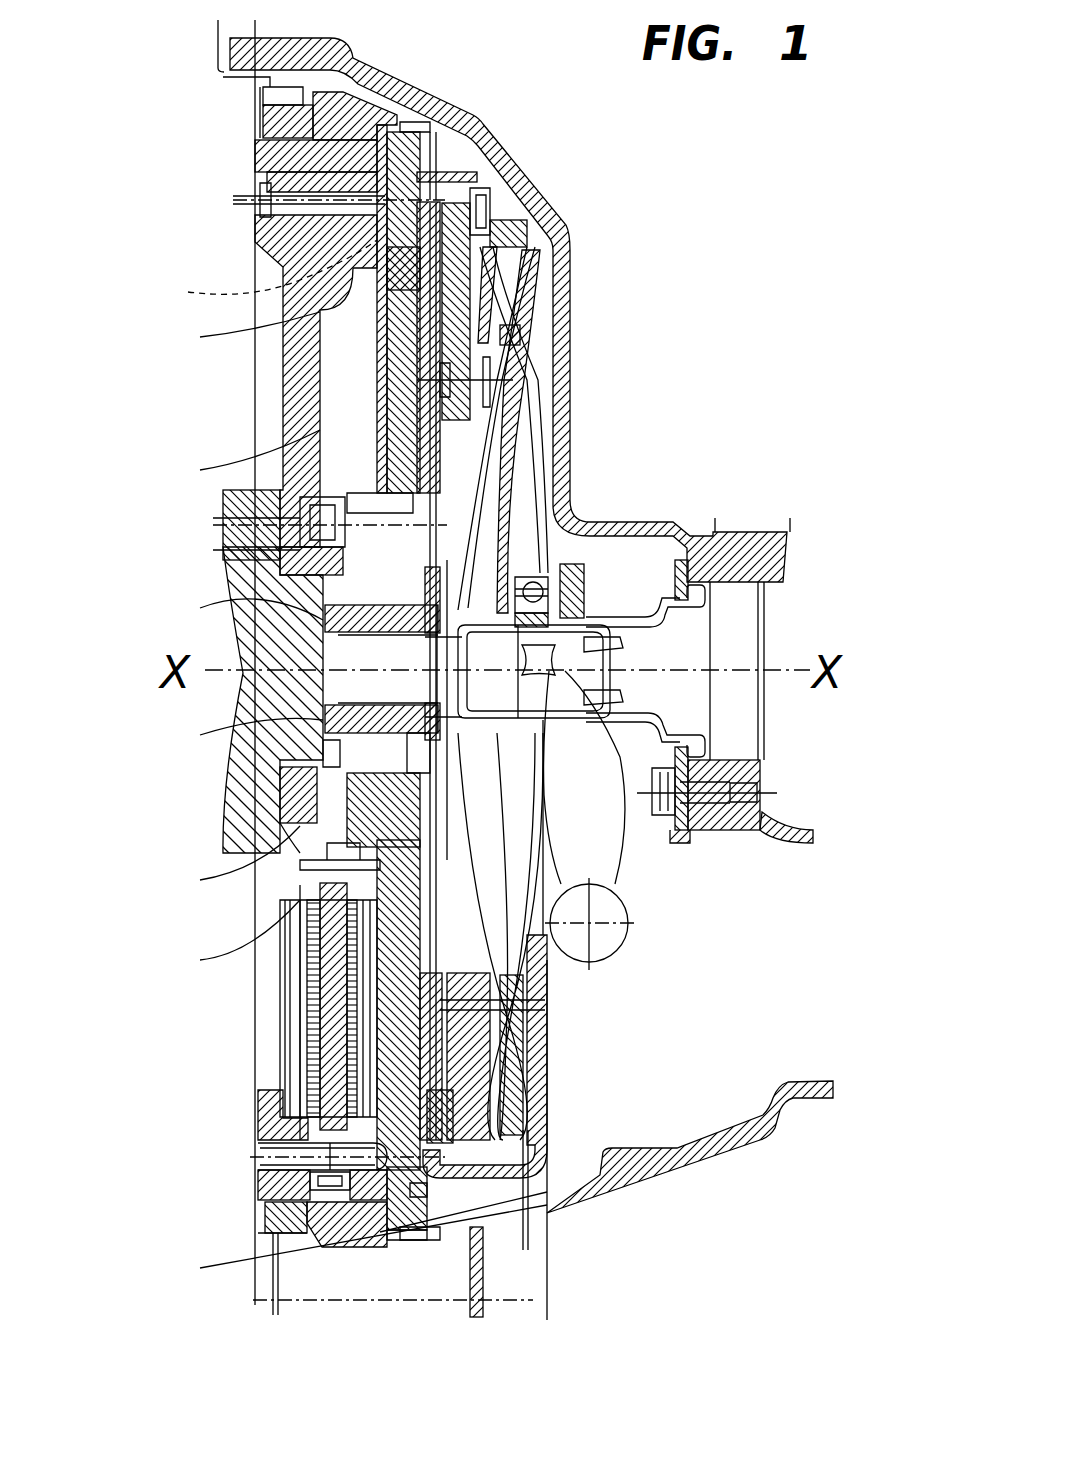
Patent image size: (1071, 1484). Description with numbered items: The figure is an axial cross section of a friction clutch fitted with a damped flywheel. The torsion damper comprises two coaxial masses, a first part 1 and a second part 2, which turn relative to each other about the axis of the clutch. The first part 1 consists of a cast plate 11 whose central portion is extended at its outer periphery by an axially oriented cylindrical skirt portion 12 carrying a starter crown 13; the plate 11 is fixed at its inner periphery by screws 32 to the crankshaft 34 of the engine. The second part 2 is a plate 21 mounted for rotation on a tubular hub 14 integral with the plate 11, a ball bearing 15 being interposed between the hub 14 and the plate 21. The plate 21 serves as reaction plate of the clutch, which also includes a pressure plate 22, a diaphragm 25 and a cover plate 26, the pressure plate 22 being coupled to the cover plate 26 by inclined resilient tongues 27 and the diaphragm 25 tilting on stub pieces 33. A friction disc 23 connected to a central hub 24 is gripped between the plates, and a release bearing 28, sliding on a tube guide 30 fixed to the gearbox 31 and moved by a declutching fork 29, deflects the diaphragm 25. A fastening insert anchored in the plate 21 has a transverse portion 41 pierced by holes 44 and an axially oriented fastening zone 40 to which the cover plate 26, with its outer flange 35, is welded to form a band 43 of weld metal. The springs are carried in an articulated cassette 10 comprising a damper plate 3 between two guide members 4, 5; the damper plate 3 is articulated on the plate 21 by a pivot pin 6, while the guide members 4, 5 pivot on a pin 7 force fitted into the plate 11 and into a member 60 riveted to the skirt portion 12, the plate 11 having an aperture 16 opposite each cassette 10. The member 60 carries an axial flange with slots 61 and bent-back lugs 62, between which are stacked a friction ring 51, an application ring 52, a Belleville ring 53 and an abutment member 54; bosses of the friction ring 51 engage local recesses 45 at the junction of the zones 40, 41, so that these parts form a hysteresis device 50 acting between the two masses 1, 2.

The first coaxial part 1 is at (232, 235).
The second coaxial part 2 is at (445, 156).
The damper plate 3 is at (313, 998).
The guide member 4 is at (307, 1062).
The guide member 5 is at (318, 1095).
The pivot pin 6 is at (332, 880).
The pivot pin 7 is at (300, 1160).
The articulated cassette 10 is at (300, 1035).
The plate 11 is at (285, 378).
The cylindrical skirt portion 12 is at (362, 112).
The starter crown 13 is at (262, 108).
The tubular hub 14 is at (338, 618).
The bearing 15 is at (240, 575).
The aperture 16 is at (340, 866).
The reaction plate 21 is at (377, 417).
The pressure plate 22 is at (453, 200).
The friction disc 23 is at (435, 448).
The central hub 24 is at (345, 722).
The diaphragm 25 is at (565, 256).
The cover plate 26 is at (547, 1084).
The inclined resilient tongues 27 is at (500, 333).
The release bearing 28 is at (572, 564).
The declutching fork 29 is at (612, 862).
The tube guide 30 is at (636, 625).
The gearbox 31 is at (749, 543).
The screws 32 is at (253, 505).
The stub pieces 33 is at (547, 986).
The crankshaft 34 is at (262, 868).
The axially oriented flange 35 is at (467, 1180).
The fastening zone 40 is at (517, 1193).
The transverse portion 41 is at (377, 262).
The band of weld metal 43 is at (540, 1258).
The holes 44 is at (261, 272).
The local recesses 45 is at (256, 183).
The hysteresis device 50 is at (430, 125).
The friction ring 51 is at (262, 150).
The application ring 52 is at (407, 1223).
The axially acting resilient ring 53 is at (410, 1213).
The abutment member 54 is at (373, 1207).
The member 60 is at (335, 1203).
The slots 61 is at (407, 148).
The lugs 62 is at (427, 1217).